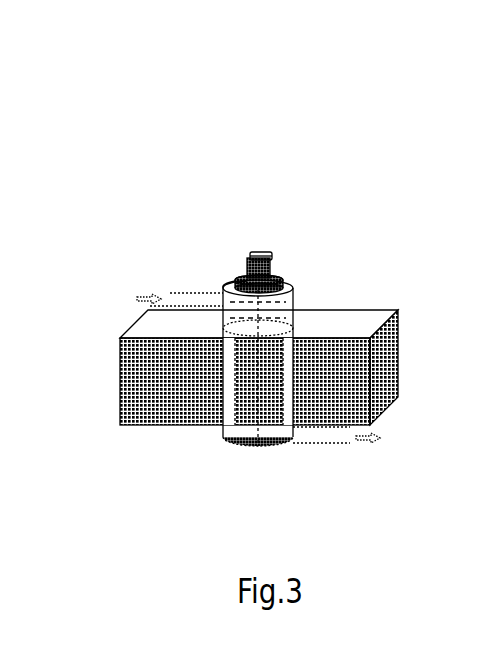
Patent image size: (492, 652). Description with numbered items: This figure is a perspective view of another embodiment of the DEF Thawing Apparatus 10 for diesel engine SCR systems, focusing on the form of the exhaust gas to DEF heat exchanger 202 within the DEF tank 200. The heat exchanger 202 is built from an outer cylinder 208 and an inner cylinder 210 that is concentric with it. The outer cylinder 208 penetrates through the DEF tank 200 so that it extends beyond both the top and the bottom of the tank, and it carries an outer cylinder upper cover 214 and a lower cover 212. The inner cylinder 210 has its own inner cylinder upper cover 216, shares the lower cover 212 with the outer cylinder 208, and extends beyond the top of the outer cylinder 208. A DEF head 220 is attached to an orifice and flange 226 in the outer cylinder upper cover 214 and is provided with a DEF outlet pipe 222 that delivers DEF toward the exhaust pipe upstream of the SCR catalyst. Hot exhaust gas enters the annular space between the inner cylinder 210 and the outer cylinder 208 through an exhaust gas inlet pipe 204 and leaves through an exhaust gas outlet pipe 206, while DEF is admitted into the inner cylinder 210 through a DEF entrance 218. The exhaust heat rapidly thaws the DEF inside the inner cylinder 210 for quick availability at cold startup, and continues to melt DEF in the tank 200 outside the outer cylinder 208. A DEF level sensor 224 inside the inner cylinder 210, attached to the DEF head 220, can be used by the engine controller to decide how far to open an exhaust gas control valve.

The DEF Thawing Apparatus 10 is at (248, 130).
The DEF tank 200 is at (120, 425).
The exhaust gas to DEF heat exchanger 202 is at (293, 380).
The exhaust gas inlet pipe 204 is at (183, 292).
The exhaust gas outlet pipe 206 is at (328, 447).
The outer cylinder 208 is at (294, 291).
The inner cylinder 210 is at (280, 279).
The lower cover 212 is at (257, 450).
The outer cylinder upper cover 214 is at (229, 281).
The inner cylinder upper cover 216 is at (238, 280).
The DEF entrance 218 is at (222, 412).
The DEF head 220 is at (259, 252).
The DEF outlet pipe 222 is at (272, 262).
The DEF level sensor 224 is at (267, 254).
The orifice and flange 226 is at (277, 275).